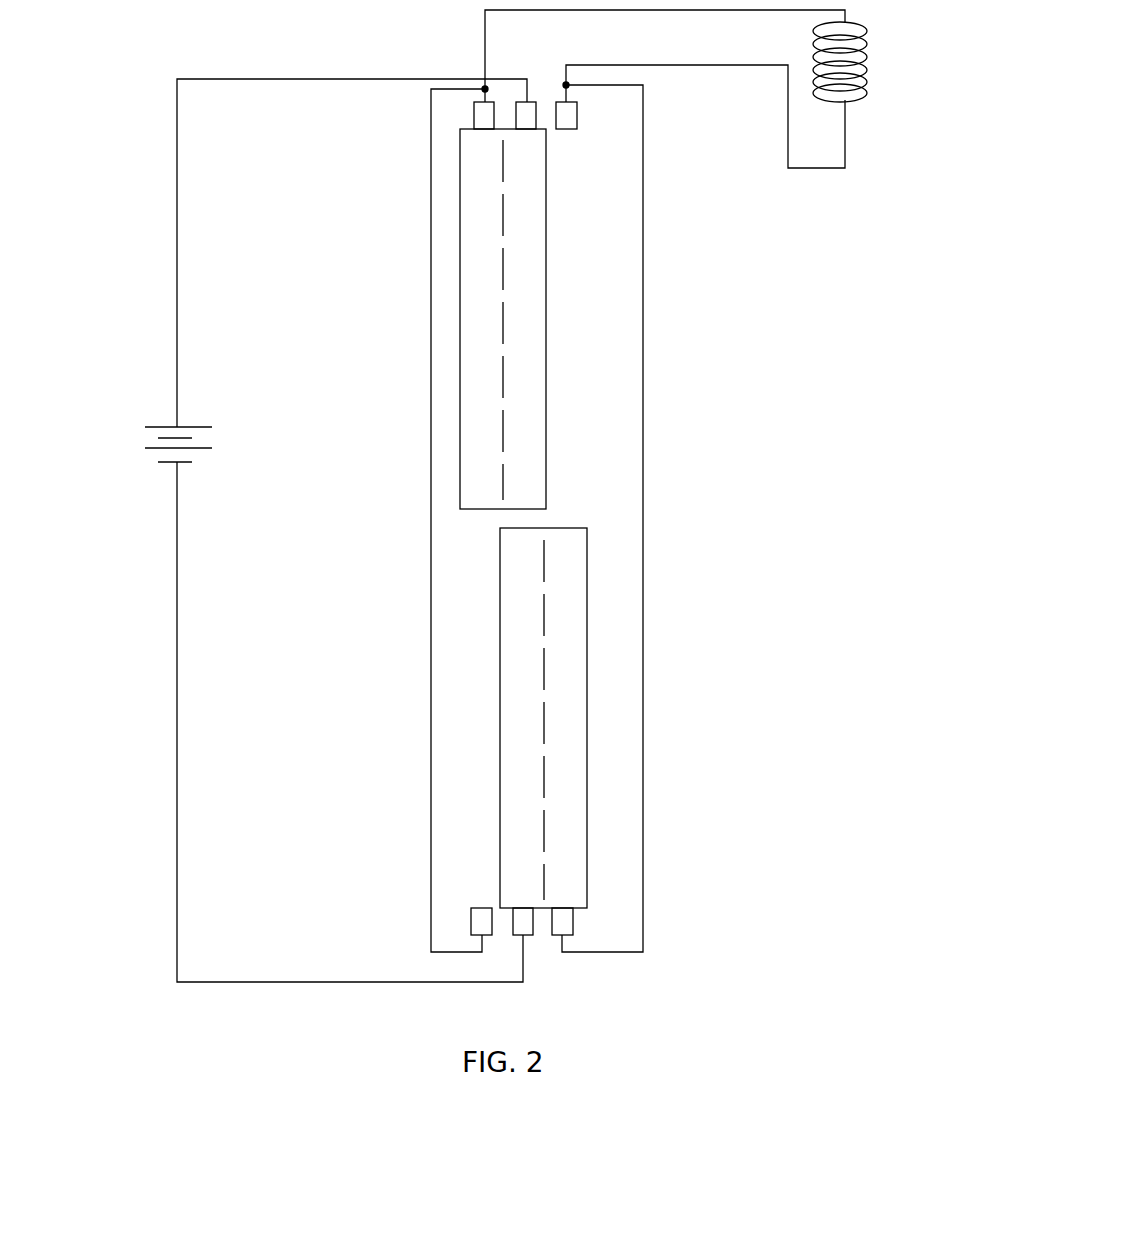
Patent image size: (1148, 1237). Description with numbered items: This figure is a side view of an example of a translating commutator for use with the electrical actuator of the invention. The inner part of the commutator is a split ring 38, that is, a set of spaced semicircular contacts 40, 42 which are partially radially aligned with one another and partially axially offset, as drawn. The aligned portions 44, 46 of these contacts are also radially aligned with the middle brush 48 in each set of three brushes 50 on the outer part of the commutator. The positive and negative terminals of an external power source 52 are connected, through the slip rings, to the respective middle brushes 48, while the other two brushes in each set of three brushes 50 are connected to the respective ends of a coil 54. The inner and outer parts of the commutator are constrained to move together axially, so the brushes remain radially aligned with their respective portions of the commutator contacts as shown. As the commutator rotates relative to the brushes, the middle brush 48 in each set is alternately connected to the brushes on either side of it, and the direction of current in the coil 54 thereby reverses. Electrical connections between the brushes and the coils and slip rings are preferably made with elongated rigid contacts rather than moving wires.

The split ring 38 is at (632, 414).
The semicircular contact 40 is at (560, 245).
The semicircular contact 42 is at (610, 713).
The aligned portion 44 is at (520, 439).
The aligned portion 46 is at (516, 563).
The middle brush 48 is at (527, 113).
The set of three brushes 50 is at (600, 116).
The external power source 52 is at (118, 432).
The coil 54 is at (840, 72).